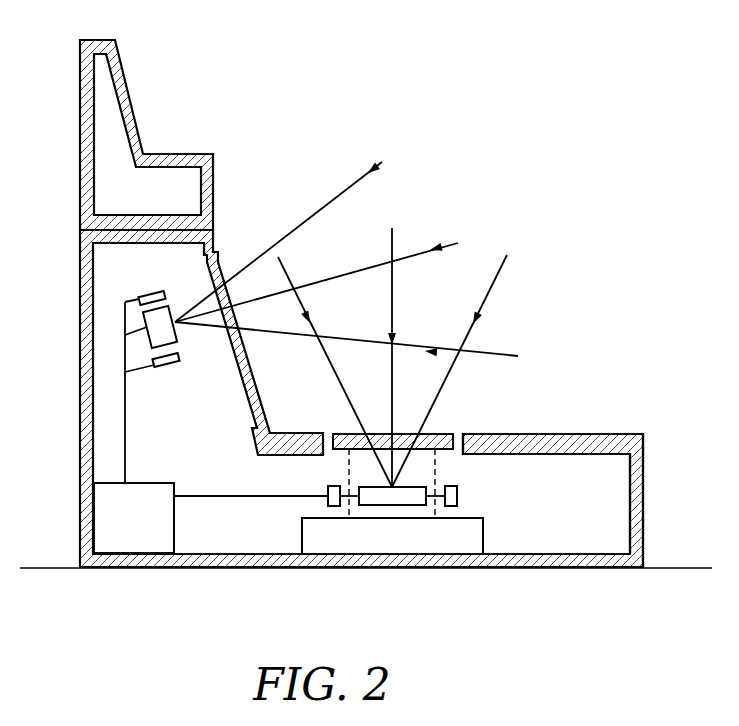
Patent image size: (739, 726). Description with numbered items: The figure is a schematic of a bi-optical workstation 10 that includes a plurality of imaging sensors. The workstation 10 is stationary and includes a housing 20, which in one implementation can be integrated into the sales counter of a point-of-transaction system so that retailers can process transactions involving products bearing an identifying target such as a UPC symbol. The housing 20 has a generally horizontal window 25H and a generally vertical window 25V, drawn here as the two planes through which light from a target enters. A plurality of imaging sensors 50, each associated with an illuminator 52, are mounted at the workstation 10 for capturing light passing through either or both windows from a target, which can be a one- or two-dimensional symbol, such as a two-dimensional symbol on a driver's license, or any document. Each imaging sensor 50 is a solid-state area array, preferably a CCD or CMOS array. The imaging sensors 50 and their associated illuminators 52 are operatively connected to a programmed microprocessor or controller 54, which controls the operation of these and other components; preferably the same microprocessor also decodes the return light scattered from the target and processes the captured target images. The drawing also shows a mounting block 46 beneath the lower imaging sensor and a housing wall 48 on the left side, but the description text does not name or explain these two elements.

The workstation 10 is at (576, 378).
The housing 20 is at (620, 434).
The horizontal window 25H is at (433, 434).
The vertical window 25V is at (226, 277).
The sensor mount 46 is at (312, 532).
The housing wall 48 is at (80, 108).
The imaging sensor 50 is at (144, 316).
The illuminator 52 is at (147, 296).
The controller 54 is at (102, 504).